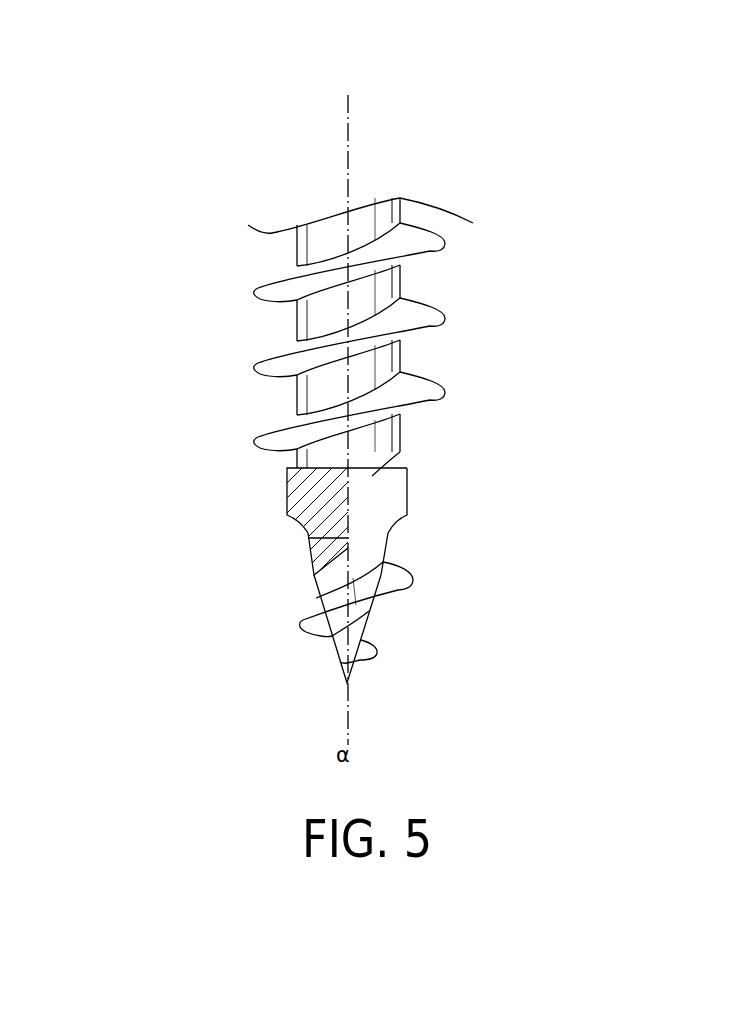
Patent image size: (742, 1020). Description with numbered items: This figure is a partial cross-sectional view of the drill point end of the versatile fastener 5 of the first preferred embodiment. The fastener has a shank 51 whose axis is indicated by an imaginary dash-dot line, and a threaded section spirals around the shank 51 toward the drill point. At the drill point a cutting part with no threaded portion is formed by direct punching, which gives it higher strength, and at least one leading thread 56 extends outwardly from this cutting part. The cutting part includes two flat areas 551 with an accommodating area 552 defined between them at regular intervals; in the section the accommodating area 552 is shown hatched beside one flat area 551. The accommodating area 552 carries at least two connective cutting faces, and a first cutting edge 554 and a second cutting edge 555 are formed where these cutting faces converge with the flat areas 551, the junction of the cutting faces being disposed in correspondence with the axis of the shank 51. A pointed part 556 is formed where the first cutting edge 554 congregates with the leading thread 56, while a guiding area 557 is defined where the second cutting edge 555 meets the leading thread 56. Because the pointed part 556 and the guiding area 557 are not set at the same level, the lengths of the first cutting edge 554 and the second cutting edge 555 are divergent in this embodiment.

The versatile fastener 5 is at (152, 177).
The shank 51 is at (400, 352).
The flat area 551 is at (400, 462).
The accommodating area 552 is at (320, 509).
The first cutting edge 554 is at (322, 538).
The second cutting edge 555 is at (408, 492).
The pointed part 556 is at (393, 590).
The guiding area 557 is at (388, 533).
The leading thread 56 is at (320, 618).